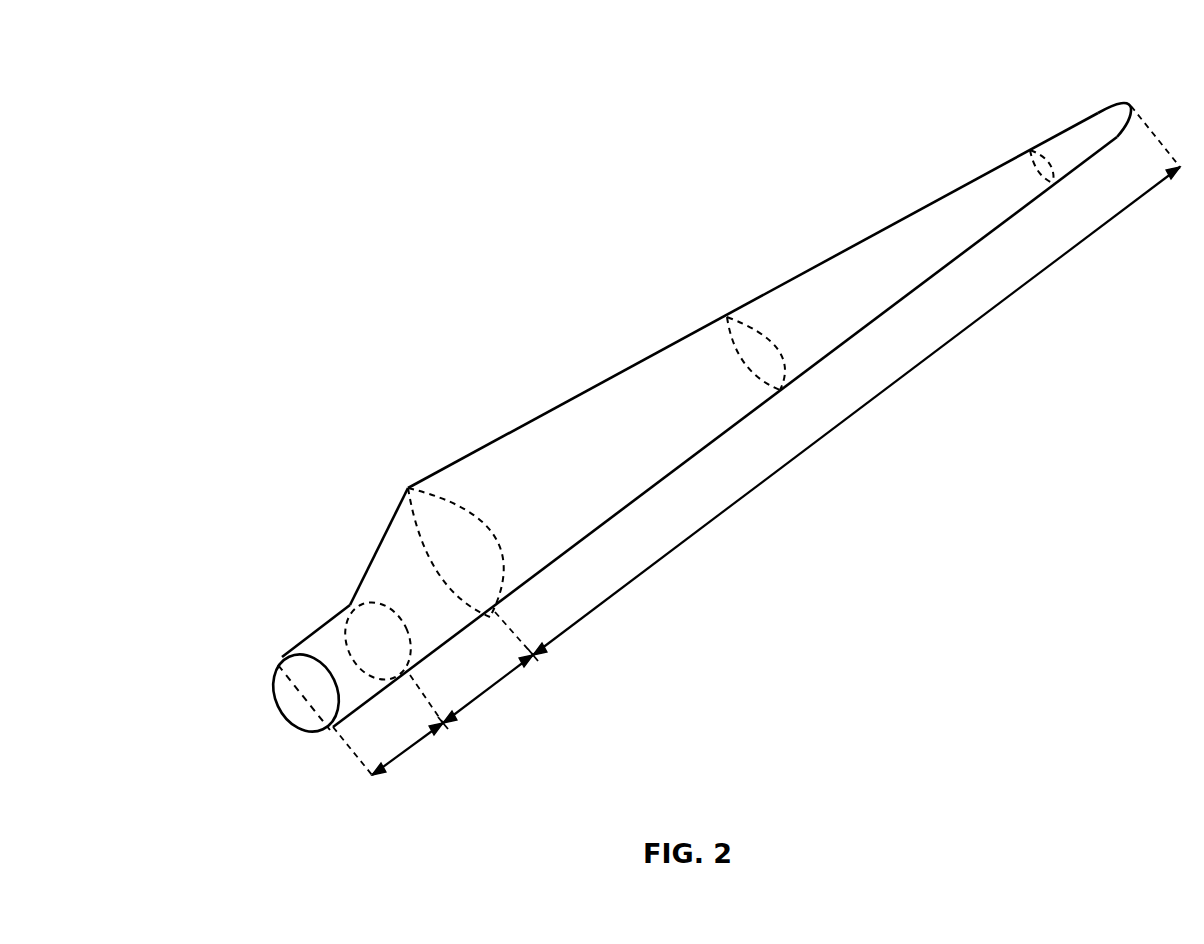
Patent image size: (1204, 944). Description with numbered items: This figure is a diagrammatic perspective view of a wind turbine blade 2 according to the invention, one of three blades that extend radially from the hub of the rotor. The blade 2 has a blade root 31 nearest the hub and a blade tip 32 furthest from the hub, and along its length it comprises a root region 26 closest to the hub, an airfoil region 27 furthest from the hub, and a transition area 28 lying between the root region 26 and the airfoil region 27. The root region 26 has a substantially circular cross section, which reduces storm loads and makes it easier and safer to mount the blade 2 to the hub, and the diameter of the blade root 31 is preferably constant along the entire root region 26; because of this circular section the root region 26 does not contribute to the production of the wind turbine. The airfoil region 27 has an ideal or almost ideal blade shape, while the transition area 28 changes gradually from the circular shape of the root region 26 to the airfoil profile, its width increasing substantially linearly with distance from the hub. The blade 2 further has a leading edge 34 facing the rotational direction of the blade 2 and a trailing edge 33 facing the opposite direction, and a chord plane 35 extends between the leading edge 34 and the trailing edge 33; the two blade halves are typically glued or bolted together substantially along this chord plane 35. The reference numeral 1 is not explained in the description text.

The blade root 1 is at (238, 682).
The blade 2 is at (732, 388).
The root region 26 is at (407, 753).
The airfoil region 27 is at (858, 408).
The transition area 28 is at (495, 685).
The blade root 31 is at (332, 658).
The blade tip 32 is at (1105, 122).
The trailing edge 33 is at (658, 352).
The leading edge 34 is at (710, 447).
The chord plane 35 is at (295, 690).